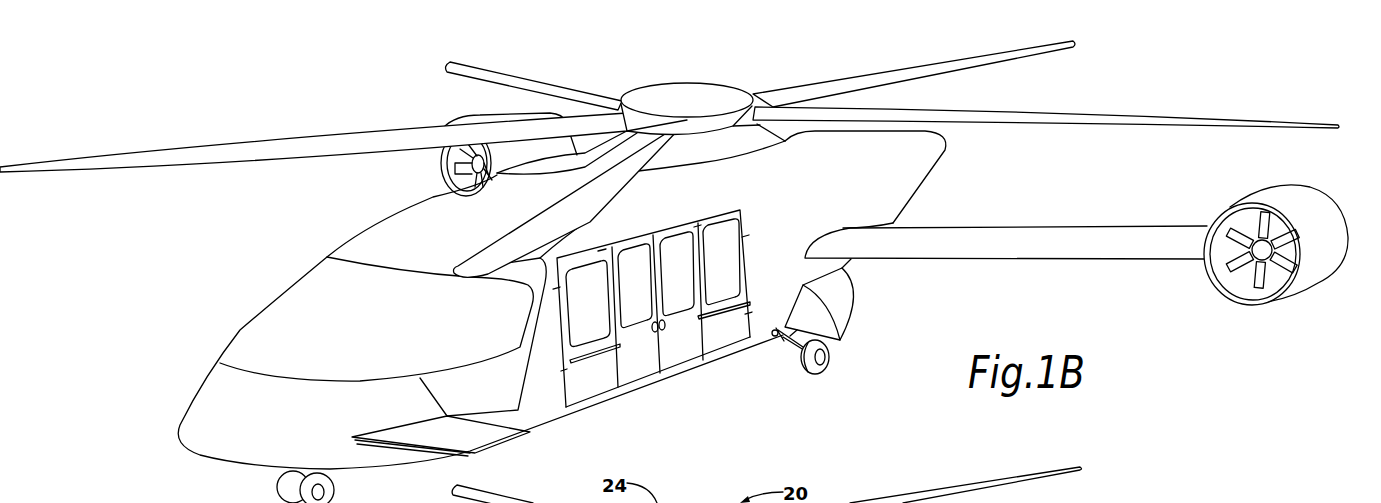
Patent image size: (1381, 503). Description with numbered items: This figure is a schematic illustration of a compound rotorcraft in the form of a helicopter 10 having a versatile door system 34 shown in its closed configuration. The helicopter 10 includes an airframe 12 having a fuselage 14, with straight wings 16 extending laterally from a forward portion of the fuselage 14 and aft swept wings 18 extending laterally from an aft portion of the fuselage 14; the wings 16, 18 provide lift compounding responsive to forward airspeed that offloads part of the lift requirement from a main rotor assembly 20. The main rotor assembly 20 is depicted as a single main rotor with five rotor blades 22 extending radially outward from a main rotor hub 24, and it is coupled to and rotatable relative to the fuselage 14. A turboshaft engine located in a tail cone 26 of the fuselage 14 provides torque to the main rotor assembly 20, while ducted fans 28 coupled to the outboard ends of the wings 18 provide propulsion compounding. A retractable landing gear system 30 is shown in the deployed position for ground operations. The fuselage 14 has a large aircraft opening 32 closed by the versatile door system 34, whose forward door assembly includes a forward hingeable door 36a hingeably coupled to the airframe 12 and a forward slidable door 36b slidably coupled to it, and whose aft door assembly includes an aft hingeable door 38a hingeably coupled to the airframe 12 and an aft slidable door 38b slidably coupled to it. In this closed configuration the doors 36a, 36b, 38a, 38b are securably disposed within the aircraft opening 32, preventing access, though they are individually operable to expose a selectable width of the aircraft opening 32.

The helicopter 10 is at (680, 272).
The airframe 12 is at (410, 212).
The fuselage 14 is at (353, 240).
The wings 16 is at (495, 447).
The wings 18 is at (1105, 237).
The main rotor assembly 20 is at (669, 159).
The rotor blades 22 is at (1070, 112).
The main rotor hub 24 is at (657, 95).
The tail cone 26 is at (928, 172).
The ducted fans 28 is at (1298, 197).
The retractable landing gear system 30 is at (832, 368).
The aircraft opening 32 is at (677, 334).
The versatile door system 34 is at (581, 406).
The forward hingeable door 36a is at (593, 392).
The forward slidable door 36b is at (632, 378).
The aft hingeable door 38a is at (723, 342).
The aft slidable door 38b is at (687, 358).